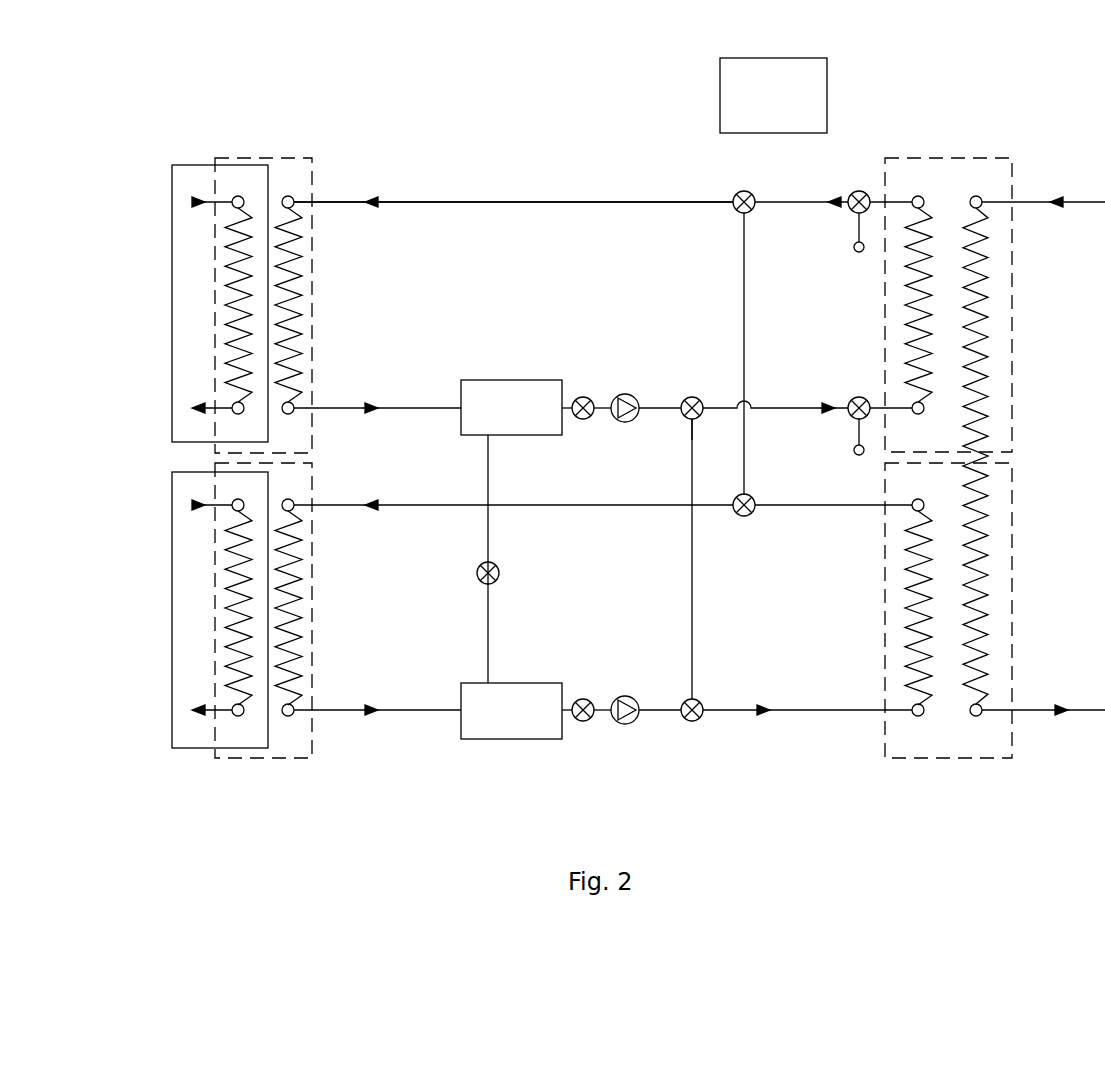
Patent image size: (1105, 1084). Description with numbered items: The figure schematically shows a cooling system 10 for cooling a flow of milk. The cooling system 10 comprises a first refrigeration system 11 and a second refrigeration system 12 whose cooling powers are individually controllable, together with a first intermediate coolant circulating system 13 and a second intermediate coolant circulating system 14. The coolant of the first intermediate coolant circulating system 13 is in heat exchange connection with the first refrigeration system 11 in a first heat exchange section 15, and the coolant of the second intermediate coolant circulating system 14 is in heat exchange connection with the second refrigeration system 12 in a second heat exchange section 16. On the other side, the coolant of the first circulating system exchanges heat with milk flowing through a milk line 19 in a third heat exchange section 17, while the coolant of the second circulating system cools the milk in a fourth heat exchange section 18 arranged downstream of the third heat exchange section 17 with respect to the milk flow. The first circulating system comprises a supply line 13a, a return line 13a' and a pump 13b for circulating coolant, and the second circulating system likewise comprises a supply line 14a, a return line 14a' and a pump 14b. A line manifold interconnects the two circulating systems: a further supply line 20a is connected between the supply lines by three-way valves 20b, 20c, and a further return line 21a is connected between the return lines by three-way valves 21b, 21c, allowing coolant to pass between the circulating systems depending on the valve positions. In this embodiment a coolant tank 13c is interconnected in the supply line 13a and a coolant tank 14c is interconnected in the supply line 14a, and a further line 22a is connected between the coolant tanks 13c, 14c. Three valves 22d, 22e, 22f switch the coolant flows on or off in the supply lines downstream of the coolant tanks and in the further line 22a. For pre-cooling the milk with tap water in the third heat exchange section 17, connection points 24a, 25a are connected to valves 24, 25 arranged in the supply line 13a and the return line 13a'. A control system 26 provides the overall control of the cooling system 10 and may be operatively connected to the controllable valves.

The cooling system 10 is at (452, 137).
The first refrigeration system 11 is at (192, 165).
The second refrigeration system 12 is at (190, 748).
The first intermediate coolant circulating system 13 is at (605, 185).
The supply line 13a is at (763, 374).
The return line 13a' is at (513, 232).
The pump 13b is at (626, 394).
The coolant tank 13c is at (512, 380).
The second intermediate coolant circulating system 14 is at (621, 760).
The supply line 14a is at (795, 736).
The return line 14a' is at (603, 530).
The pump 14b is at (631, 698).
The coolant tank 14c is at (535, 683).
The first heat exchange section 15 is at (270, 158).
The second heat exchange section 16 is at (268, 758).
The third heat exchange section 17 is at (956, 158).
The fourth heat exchange section 18 is at (955, 758).
The milk line 19 is at (1036, 202).
The further supply line 20a is at (695, 630).
The three-way valve 20b is at (700, 700).
The three-way valve 20c is at (681, 420).
The further return line 21a is at (743, 290).
The three-way valve 21b is at (748, 495).
The three-way valve 21c is at (733, 208).
The further line 22a is at (488, 615).
The valve 22d is at (585, 698).
The valve 22e is at (585, 396).
The valve 22f is at (478, 568).
The valve 24 is at (852, 397).
The connection point 24a is at (853, 456).
The valve 25 is at (852, 212).
The connection point 25a is at (855, 252).
The control system 26 is at (827, 100).